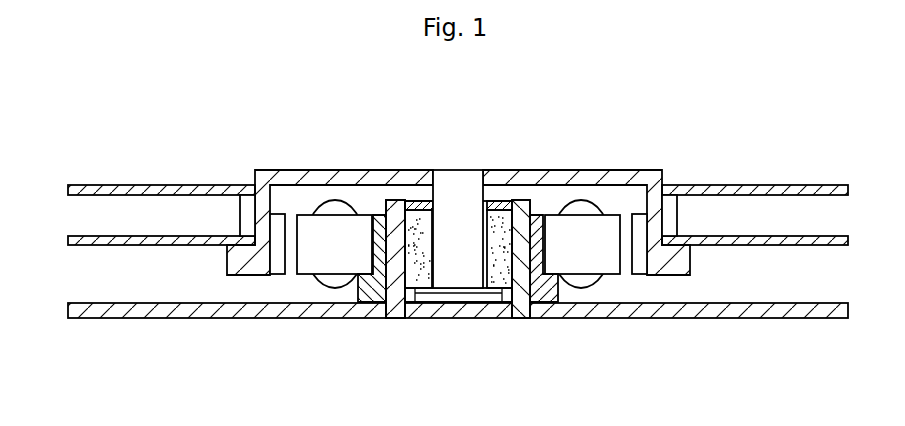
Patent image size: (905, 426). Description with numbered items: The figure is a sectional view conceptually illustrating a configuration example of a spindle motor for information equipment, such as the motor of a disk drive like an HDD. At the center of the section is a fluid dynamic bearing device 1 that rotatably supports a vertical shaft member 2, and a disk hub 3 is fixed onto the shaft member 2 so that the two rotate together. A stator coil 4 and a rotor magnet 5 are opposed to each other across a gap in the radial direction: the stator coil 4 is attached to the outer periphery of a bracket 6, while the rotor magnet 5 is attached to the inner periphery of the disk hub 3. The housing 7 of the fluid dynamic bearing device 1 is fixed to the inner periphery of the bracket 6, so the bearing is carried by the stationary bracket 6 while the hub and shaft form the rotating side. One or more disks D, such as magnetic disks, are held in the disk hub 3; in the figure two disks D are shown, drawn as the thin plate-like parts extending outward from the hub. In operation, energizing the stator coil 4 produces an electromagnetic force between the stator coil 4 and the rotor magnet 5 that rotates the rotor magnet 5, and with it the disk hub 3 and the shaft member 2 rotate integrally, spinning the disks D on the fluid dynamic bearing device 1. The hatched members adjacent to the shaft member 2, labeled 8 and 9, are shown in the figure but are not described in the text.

The fluid dynamic bearing device 1 is at (477, 209).
The shaft member 2 is at (465, 166).
The disk hub 3 is at (639, 178).
The stator coil 4 is at (614, 265).
The rotor magnet 5 is at (645, 267).
The bracket 6 is at (325, 310).
The housing 7 is at (397, 293).
The elastic member 8 is at (503, 205).
The elastic member 9 is at (417, 203).
The disk D is at (773, 183).